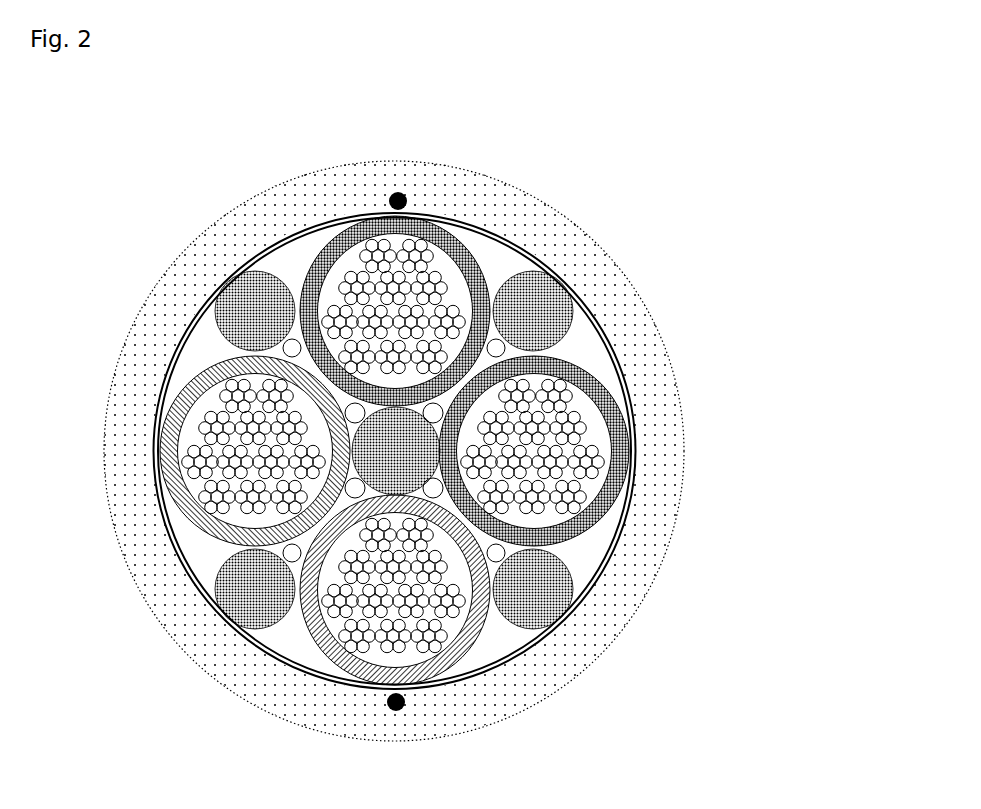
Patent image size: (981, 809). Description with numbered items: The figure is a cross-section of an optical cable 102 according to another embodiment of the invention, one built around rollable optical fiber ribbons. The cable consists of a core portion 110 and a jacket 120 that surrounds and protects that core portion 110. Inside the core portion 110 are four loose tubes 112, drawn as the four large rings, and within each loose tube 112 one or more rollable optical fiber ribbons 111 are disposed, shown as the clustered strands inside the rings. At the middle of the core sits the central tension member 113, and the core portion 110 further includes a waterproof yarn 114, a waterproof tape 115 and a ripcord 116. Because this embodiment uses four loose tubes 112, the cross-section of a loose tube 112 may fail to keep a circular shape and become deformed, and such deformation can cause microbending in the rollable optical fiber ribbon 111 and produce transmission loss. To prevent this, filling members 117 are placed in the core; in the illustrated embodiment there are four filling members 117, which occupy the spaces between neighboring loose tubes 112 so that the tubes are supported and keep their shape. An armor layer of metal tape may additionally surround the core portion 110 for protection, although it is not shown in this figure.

The cable 102 is at (413, 131).
The core portion 110 is at (818, 695).
The rollable optical fiber ribbon 111 is at (627, 395).
The loose tube 112 is at (642, 332).
The central tension member 113 is at (627, 272).
The waterproof yarn 114 is at (592, 436).
The waterproof tape 115 is at (548, 630).
The ripcord 116 is at (405, 702).
The filling member 117 is at (570, 582).
The jacket 120 is at (192, 635).